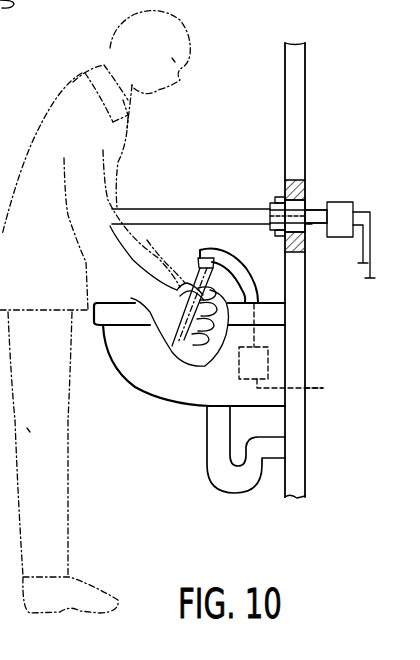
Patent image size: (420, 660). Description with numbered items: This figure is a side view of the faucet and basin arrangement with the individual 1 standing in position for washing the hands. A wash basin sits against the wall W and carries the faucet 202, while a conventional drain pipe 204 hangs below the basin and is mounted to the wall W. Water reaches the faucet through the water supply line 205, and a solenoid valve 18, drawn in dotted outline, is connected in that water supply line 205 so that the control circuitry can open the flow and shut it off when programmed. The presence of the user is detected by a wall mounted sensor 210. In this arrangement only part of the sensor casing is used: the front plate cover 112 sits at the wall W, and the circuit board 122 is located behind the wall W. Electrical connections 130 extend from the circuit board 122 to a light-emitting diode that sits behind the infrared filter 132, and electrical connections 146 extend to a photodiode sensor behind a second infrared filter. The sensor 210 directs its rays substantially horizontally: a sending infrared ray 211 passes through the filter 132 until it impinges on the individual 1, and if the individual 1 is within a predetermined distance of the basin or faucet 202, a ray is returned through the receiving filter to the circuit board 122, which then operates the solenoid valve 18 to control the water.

The individual 1 is at (58, 98).
The wall W is at (305, 88).
The sending infrared ray 211 is at (160, 209).
The infrared filter 132 is at (270, 207).
The front plate cover 112 is at (279, 197).
The wall mounted sensor 210 is at (279, 200).
The electrical connections 130 is at (316, 209).
The electrical connections 146 is at (317, 224).
The circuit board 122 is at (342, 207).
The faucet 202 is at (253, 285).
The drain pipe 204 is at (233, 485).
The solenoid valve 18 is at (268, 363).
The water supply line 205 is at (312, 390).